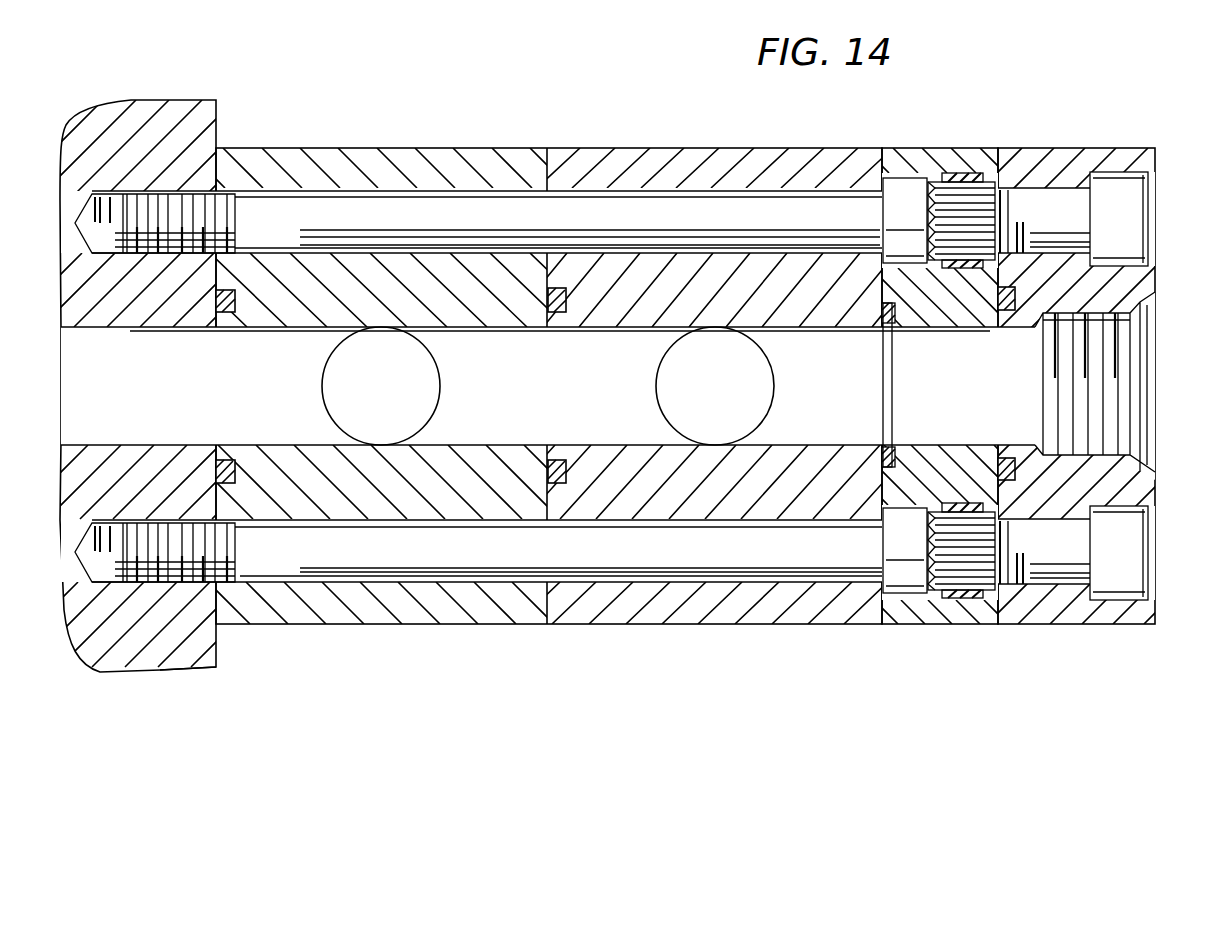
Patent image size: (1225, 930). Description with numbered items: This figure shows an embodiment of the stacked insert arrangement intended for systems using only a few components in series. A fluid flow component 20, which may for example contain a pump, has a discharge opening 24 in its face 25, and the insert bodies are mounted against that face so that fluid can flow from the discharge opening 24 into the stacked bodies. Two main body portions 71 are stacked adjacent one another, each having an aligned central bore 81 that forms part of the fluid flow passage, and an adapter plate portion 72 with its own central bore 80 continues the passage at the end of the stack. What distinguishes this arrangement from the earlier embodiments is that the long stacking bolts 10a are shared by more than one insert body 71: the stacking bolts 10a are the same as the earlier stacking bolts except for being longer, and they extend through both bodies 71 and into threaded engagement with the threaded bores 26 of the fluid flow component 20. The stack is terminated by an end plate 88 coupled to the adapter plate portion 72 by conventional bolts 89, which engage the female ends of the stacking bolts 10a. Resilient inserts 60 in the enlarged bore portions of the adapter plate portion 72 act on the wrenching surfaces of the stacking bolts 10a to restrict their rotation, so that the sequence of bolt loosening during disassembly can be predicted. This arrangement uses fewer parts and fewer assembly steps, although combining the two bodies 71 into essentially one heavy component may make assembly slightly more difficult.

The fluid flow component 20 is at (157, 99).
The main body portion 71 is at (322, 147).
The adapter plate portion 72 is at (928, 147).
The end plate 88 is at (1075, 147).
The discharge opening 24 is at (112, 330).
The central bore 81 is at (258, 330).
The stacking bolts 10a is at (728, 193).
The threaded bore 26 is at (165, 196).
The resilient inserts 60 is at (962, 175).
The conventional bolts 89 is at (1130, 215).
The central bore 80 is at (928, 328).
The face 25 is at (222, 655).